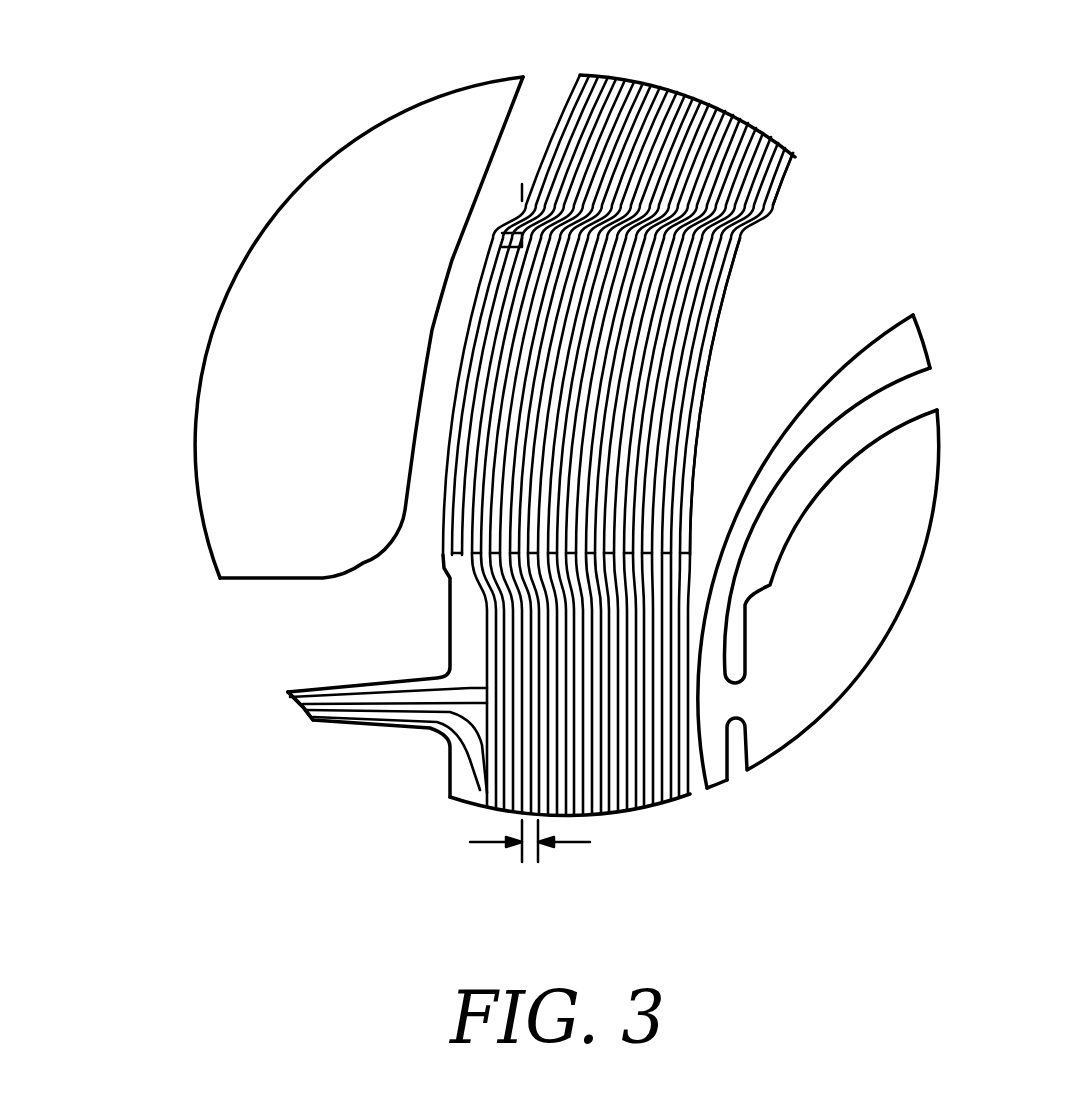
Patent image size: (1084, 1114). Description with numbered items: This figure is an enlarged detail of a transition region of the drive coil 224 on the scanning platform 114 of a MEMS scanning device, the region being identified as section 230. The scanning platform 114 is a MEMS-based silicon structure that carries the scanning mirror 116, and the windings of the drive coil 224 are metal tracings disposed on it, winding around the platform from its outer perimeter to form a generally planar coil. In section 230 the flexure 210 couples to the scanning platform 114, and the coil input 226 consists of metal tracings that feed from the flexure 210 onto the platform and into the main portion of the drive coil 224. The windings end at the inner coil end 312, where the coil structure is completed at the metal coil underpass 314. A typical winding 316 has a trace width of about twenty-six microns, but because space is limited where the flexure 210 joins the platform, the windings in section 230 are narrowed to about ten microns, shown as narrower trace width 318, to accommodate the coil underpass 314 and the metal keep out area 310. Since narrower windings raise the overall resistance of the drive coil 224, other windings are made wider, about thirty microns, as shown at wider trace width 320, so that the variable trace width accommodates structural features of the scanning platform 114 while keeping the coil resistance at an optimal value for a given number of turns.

The scanning platform 114 is at (560, 78).
The scanning mirror 116 is at (870, 605).
The drive coil 224 is at (762, 93).
The section 230 is at (158, 212).
The metal keep out area 310 is at (460, 628).
The inner coil end 312 is at (760, 228).
The metal coil underpass 314 is at (754, 288).
The winding 316 is at (597, 287).
The narrower trace width 318 is at (530, 858).
The wider trace width 320 is at (573, 210).
The coil input 226 is at (296, 706).
The flexure 210 is at (327, 723).